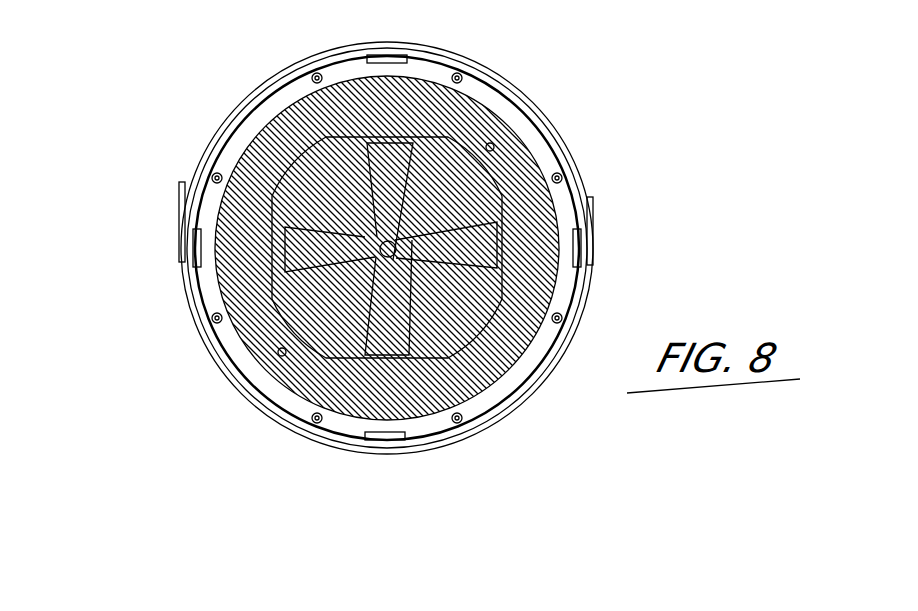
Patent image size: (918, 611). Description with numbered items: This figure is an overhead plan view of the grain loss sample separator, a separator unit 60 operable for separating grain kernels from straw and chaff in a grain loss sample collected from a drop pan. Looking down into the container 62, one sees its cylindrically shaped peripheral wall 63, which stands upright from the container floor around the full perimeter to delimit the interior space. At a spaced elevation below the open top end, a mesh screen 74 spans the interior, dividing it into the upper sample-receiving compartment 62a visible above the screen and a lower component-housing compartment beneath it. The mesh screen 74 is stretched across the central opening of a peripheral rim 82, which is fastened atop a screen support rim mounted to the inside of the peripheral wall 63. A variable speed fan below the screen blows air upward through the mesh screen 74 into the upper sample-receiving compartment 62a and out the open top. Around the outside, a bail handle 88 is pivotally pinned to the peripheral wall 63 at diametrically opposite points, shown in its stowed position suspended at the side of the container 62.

The separator unit 60 is at (166, 98).
The container 62 is at (206, 339).
The upper sample-receiving compartment 62a is at (400, 242).
The peripheral wall 63 is at (578, 314).
The mesh screen 74 is at (477, 118).
The peripheral rim 82 is at (424, 65).
The bail handle 88 is at (503, 63).